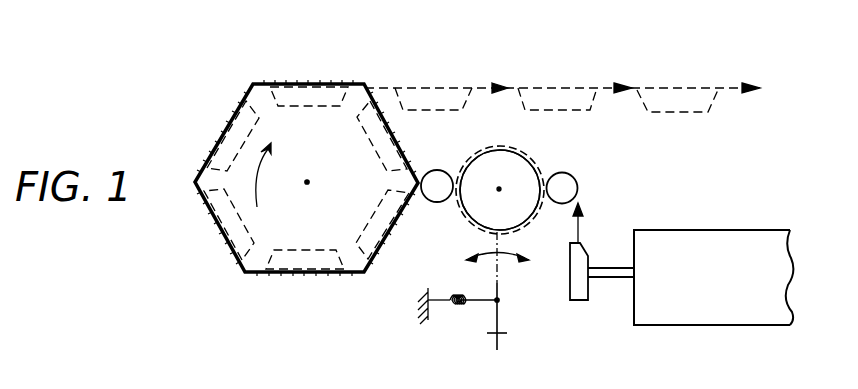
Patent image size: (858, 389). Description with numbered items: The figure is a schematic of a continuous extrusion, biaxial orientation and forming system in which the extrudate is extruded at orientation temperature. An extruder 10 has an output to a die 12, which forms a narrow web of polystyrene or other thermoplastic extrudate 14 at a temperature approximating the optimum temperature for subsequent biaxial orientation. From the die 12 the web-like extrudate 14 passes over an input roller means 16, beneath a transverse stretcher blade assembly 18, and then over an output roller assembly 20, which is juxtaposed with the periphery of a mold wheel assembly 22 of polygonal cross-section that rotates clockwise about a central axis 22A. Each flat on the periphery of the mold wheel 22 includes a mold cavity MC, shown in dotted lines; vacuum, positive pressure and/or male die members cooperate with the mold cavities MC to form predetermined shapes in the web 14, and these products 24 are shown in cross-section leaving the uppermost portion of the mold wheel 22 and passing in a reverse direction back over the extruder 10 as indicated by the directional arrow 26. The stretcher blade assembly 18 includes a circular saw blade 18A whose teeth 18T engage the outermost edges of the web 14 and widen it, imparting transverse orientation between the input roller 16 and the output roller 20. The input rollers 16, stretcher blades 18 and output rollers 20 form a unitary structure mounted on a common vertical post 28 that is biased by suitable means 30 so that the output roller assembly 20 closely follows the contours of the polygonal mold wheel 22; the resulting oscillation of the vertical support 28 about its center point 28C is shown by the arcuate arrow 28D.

The extruder 10 is at (740, 230).
The die 12 is at (580, 258).
The web of extrudate 14 is at (580, 200).
The input roller means 16 is at (565, 187).
The transverse stretcher blade assembly 18 is at (488, 148).
The first circular saw blade 18A is at (490, 173).
The teeth 18T is at (542, 173).
The output roller assembly 20 is at (435, 169).
The mold wheel assembly 22 is at (351, 157).
The central axis 22A is at (307, 182).
The mold cavity MC is at (303, 100).
The products 24 is at (530, 95).
The directional arrow 26 is at (752, 88).
The vertical post 28 is at (500, 283).
The center point 28C is at (500, 338).
The arcuate arrow 28D is at (500, 258).
The biasing means 30 is at (467, 295).